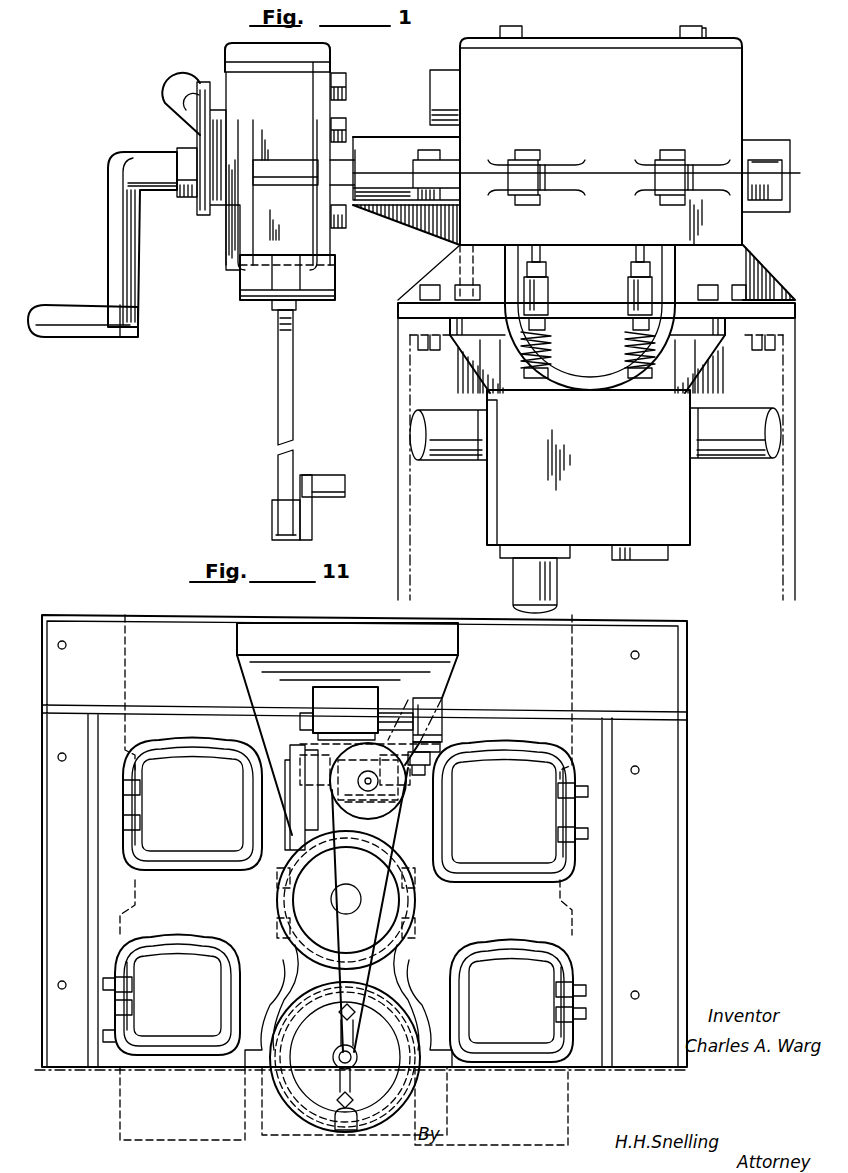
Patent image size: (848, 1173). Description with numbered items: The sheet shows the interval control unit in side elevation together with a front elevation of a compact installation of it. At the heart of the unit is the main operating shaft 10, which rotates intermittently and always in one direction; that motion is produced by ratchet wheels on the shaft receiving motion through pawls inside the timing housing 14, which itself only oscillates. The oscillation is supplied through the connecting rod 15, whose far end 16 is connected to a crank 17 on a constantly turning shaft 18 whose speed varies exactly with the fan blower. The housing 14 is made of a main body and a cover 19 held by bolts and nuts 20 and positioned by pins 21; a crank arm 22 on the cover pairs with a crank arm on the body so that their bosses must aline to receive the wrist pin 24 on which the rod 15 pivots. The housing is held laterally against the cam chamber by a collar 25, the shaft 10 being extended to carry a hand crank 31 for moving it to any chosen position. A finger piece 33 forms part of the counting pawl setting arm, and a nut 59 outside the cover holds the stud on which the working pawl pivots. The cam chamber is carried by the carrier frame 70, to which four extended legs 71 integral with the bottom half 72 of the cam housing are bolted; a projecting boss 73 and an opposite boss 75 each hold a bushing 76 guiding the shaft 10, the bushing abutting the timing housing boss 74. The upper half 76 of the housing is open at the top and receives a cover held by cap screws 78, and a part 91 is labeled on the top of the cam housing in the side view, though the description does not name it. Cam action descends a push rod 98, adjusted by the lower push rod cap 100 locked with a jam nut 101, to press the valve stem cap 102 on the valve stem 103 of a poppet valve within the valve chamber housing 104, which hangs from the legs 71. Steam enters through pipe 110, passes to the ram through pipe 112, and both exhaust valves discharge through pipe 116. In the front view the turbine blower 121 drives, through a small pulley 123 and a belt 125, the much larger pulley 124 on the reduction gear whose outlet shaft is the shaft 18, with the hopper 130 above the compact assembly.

In FIG. 1, the main operating shaft 10 is at (335, 160).
In FIG. 11, the main operating shaft 10 is at (440, 747).
In FIG. 1, the timing housing 14 is at (290, 42).
In FIG. 11, the timing housing 14 is at (442, 722).
In FIG. 1, the connecting rod 15 is at (293, 352).
In FIG. 11, the connecting rod 15 is at (428, 760).
In FIG. 1, the far end of connecting rod 16 is at (278, 512).
In FIG. 1, the crank 17 is at (312, 520).
In FIG. 11, the crank 17 is at (362, 797).
In FIG. 1, the constantly turning shaft 18 is at (335, 475).
In FIG. 11, the constantly turning shaft 18 is at (359, 712).
In FIG. 1, the cover 19 is at (215, 205).
In FIG. 1, the bolts and nuts 20 is at (346, 82).
In FIG. 1, the pins 21 is at (238, 255).
In FIG. 1, the crank arm 22 is at (325, 248).
In FIG. 1, the wrist pin 24 is at (322, 282).
In FIG. 1, the collar 25 is at (185, 197).
In FIG. 1, the hand crank 31 is at (138, 258).
In FIG. 1, the finger piece 33 is at (175, 105).
In FIG. 1, the nut 59 is at (346, 125).
In FIG. 1, the carrier frame 70 is at (495, 373).
In FIG. 1, the extended legs 71 is at (780, 318).
In FIG. 1, the bottom half of cam chamber housing 72 is at (740, 240).
In FIG. 1, the semi-cylindrical projecting boss 73 is at (405, 225).
In FIG. 1, the timing housing boss 74 is at (378, 135).
In FIG. 1, the opposite boss 75 is at (750, 195).
In FIG. 1, the bushing 76 is at (732, 60).
In FIG. 1, the cap screws 78 is at (706, 30).
In FIG. 1, the cover 91 is at (628, 38).
In FIG. 1, the push rod 98 is at (625, 252).
In FIG. 1, the lower push rod cap 100 is at (608, 288).
In FIG. 1, the jam nut 101 is at (546, 270).
In FIG. 1, the valve stem cap 102 is at (545, 305).
In FIG. 1, the valve stem 103 is at (625, 350).
In FIG. 1, the valve chamber housing 104 is at (675, 503).
In FIG. 1, the steam admission pipe 110 is at (557, 582).
In FIG. 1, the pipe 112 is at (445, 445).
In FIG. 1, the exhaust pipe 116 is at (725, 418).
In FIG. 11, the turbine blower 121 is at (390, 1002).
In FIG. 11, the small pulley 123 is at (357, 1052).
In FIG. 11, the larger pulley 124 is at (345, 810).
In FIG. 11, the belt 125 is at (400, 905).
In FIG. 11, the hopper 130 is at (458, 643).